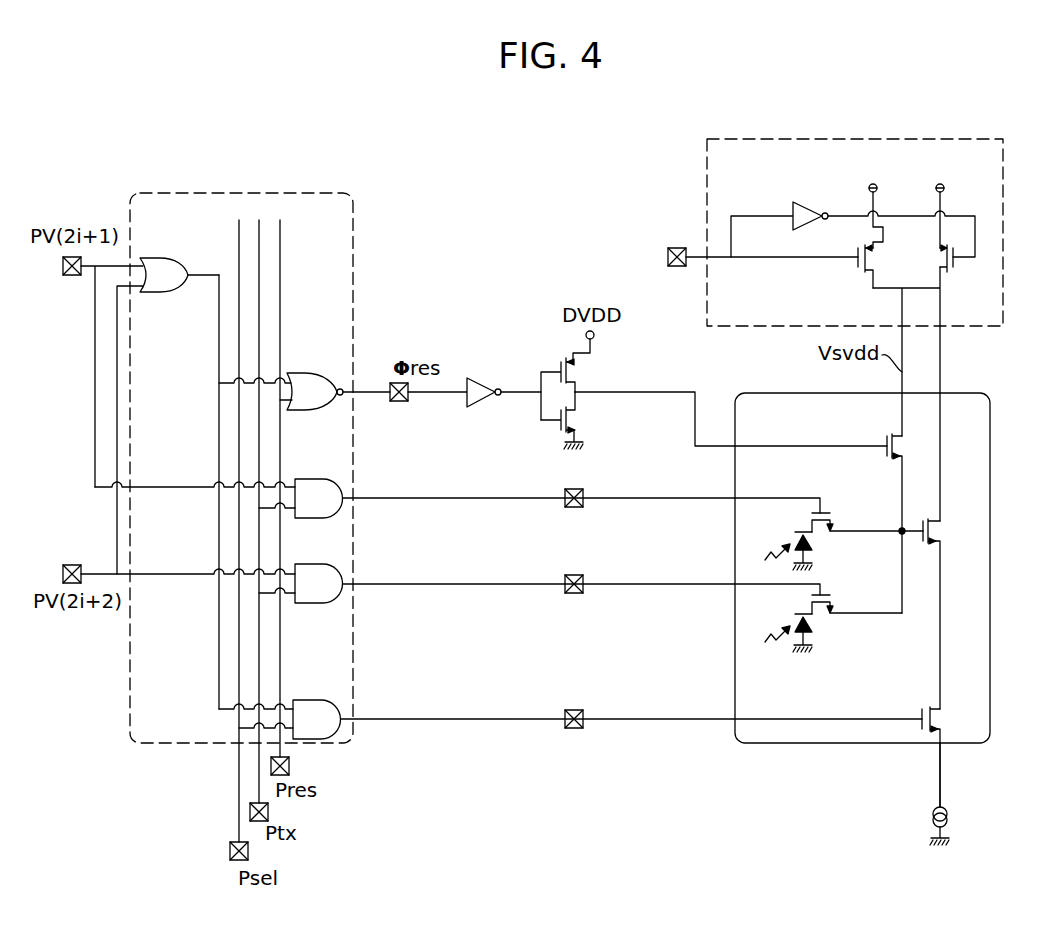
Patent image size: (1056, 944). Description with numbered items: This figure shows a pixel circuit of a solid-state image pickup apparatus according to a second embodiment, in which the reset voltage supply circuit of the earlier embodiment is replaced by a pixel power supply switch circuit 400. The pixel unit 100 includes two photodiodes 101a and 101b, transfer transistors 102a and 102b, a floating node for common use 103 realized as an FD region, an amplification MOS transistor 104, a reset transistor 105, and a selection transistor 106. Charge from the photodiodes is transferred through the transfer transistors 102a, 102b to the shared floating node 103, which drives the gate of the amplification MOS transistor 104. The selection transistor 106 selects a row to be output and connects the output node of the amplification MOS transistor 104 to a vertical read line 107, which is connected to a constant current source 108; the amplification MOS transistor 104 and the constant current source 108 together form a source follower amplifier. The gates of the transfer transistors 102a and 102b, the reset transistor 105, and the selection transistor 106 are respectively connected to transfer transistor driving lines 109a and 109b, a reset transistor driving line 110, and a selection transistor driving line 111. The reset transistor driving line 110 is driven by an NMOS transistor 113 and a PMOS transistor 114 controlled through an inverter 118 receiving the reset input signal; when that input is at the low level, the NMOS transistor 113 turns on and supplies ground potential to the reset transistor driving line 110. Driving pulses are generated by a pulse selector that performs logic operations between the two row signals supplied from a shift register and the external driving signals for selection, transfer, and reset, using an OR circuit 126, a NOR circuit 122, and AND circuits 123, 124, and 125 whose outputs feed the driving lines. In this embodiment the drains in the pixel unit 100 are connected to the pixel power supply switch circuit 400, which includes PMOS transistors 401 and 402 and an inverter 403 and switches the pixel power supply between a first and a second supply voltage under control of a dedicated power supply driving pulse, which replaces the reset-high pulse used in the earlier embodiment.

The pixel unit 100 is at (793, 393).
The photodiode 101a is at (795, 543).
The photodiode 101b is at (795, 625).
The transfer transistor 102a is at (822, 528).
The transfer transistor 102b is at (822, 610).
The floating node for common use 103 is at (900, 530).
The amplification MOS transistor 104 is at (935, 532).
The reset transistor 105 is at (887, 432).
The selection transistor 106 is at (935, 722).
The vertical read line 107 is at (940, 778).
The constant current source 108 is at (932, 817).
The transfer transistor driving line 109a is at (718, 497).
The transfer transistor driving line 109b is at (718, 583).
The reset transistor driving line 110 is at (711, 443).
The selection transistor driving line 111 is at (718, 718).
The NMOS transistor 113 is at (578, 414).
The PMOS transistor 114 is at (578, 370).
The inverter 118 is at (467, 404).
The NOR circuit 122 is at (300, 373).
The AND circuit 123 is at (315, 479).
The AND circuit 124 is at (315, 564).
The AND circuit 125 is at (315, 700).
The OR circuit 126 is at (152, 258).
The pixel power supply switch circuit 400 is at (845, 139).
The PMOS transistor 401 is at (862, 272).
The PMOS transistor 402 is at (950, 272).
The inverter 403 is at (793, 210).